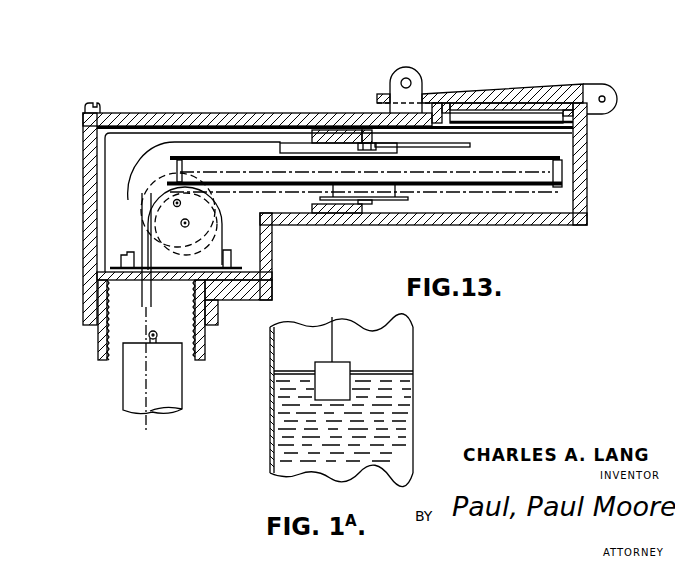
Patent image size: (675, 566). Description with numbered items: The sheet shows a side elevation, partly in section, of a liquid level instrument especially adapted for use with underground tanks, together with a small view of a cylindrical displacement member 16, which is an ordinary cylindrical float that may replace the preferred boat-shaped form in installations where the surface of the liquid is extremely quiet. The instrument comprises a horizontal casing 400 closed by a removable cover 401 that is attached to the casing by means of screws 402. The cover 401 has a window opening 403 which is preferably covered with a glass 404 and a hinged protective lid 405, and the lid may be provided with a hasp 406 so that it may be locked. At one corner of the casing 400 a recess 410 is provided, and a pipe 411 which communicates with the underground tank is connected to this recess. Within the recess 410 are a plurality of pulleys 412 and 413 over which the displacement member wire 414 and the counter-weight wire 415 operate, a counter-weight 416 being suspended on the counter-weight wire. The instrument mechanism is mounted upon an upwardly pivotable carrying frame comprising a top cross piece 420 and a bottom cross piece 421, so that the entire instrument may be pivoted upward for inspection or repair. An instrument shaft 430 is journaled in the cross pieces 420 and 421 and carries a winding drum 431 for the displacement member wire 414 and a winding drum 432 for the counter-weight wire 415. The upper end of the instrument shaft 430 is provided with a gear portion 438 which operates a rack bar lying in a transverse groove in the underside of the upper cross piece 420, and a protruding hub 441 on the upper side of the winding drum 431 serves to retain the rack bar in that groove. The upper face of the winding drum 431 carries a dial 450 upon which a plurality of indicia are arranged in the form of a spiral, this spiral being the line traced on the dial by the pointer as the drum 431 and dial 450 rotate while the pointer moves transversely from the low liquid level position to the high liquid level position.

In FIG. 13, the horizontal casing 400 is at (588, 195).
In FIG. 13, the removable cover 401 is at (176, 113).
In FIG. 13, the screws 402 is at (96, 105).
In FIG. 13, the window opening 403 is at (508, 120).
In FIG. 13, the glass 404 is at (553, 108).
In FIG. 13, the hinged protective lid 405 is at (467, 93).
In FIG. 13, the hasp 406 is at (413, 71).
In FIG. 13, the recess 410 is at (272, 247).
In FIG. 13, the pipe 411 is at (204, 350).
In FIG. 13, the pulley 412 is at (143, 197).
In FIG. 13, the pulley 413 is at (163, 242).
In FIG. 13, the displacement member wire 414 is at (143, 377).
In FIG. 13, the counter-weight wire 415 is at (152, 307).
In FIG. 13, the counter-weight 416 is at (130, 350).
In FIG. 13, the top cross piece 420 is at (327, 135).
In FIG. 13, the bottom cross piece 421 is at (342, 212).
In FIG. 13, the instrument shaft 430 is at (373, 201).
In FIG. 13, the winding drum 431 is at (515, 186).
In FIG. 13, the winding drum 432 is at (405, 199).
In FIG. 13, the gear portion 438 is at (360, 131).
In FIG. 13, the protruding hub 441 is at (342, 152).
In FIG. 13, the dial 450 is at (562, 157).
In FIG. 1A, the cylindrical displacement member 16 is at (350, 363).